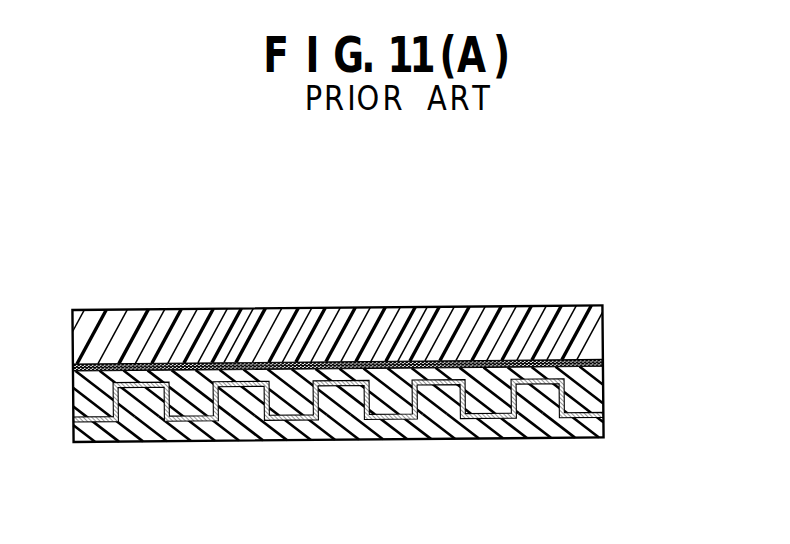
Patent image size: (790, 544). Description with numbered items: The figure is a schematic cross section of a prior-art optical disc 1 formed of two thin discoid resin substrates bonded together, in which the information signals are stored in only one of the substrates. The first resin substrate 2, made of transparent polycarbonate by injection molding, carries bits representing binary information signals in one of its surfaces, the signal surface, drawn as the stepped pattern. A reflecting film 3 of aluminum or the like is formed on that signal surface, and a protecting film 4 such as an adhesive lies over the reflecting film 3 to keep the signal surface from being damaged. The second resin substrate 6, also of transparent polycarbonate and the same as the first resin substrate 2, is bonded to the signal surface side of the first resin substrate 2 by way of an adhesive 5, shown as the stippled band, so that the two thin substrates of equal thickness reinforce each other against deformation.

The prior art display panel structure 1 is at (127, 305).
The first resin substrate 2 is at (172, 432).
The reflecting film 3 is at (508, 415).
The protecting film 4 is at (592, 384).
The adhesive 5 is at (516, 360).
The second resin substrate 6 is at (375, 316).